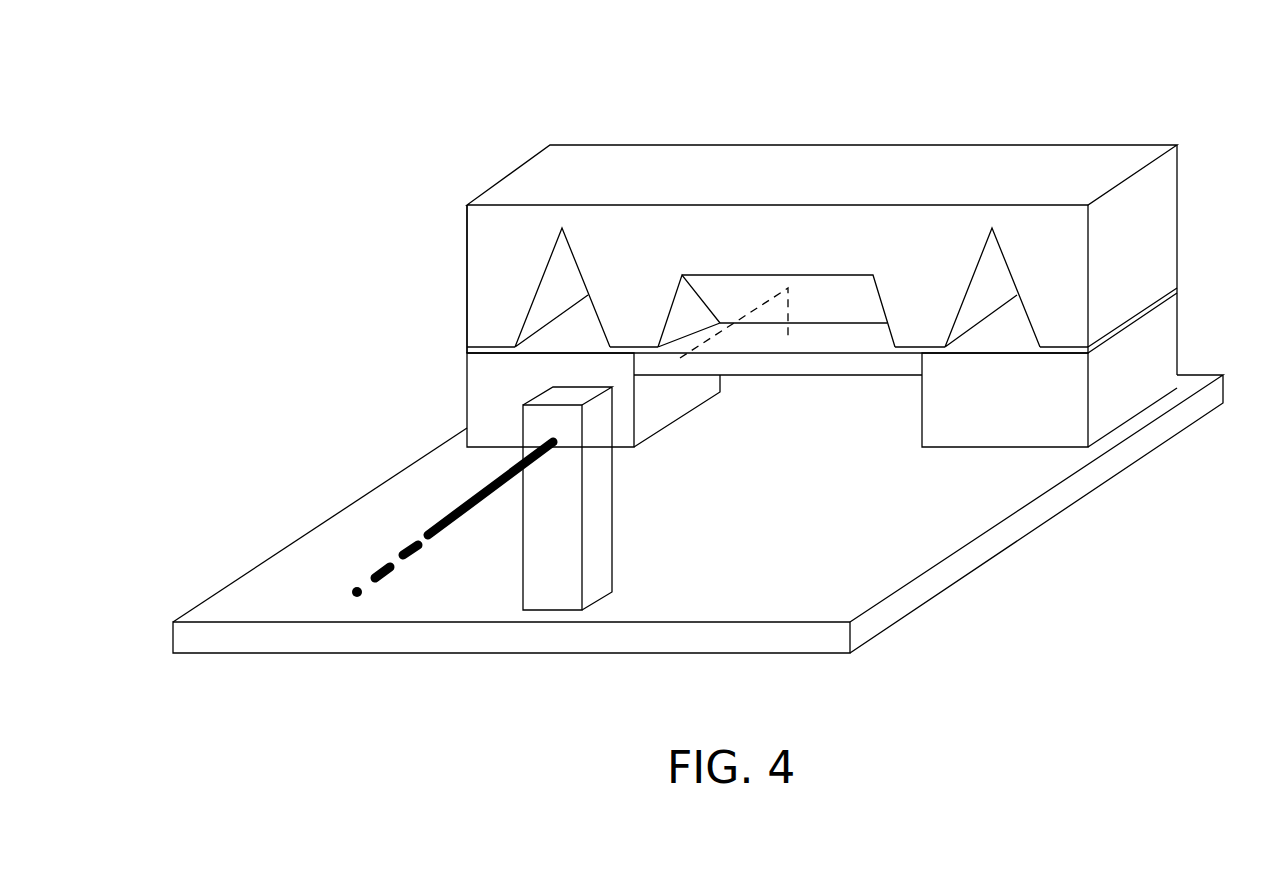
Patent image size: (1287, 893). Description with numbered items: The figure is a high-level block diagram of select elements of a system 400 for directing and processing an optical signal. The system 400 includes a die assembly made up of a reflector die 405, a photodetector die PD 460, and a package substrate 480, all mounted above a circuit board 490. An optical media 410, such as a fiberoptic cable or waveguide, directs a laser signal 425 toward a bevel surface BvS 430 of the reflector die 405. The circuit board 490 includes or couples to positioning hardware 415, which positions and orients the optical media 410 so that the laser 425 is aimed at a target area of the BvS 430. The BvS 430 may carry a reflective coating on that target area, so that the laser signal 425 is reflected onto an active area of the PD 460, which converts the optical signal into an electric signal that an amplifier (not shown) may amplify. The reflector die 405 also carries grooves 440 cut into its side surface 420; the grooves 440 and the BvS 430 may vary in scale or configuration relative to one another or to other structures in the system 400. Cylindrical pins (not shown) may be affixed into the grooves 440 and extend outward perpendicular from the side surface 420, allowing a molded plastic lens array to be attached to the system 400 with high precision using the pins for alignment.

The system 400 is at (1203, 122).
The reflector die 405 is at (822, 260).
The optical media 410 is at (450, 505).
The positioning hardware 415 is at (593, 551).
The side surface 420 is at (497, 243).
The laser signal 425 is at (652, 385).
The bevel surface 430 is at (853, 298).
The grooves 440 is at (1225, 280).
The photodetector die 460 is at (860, 328).
The package substrate 480 is at (1049, 400).
The circuit board 490 is at (698, 514).